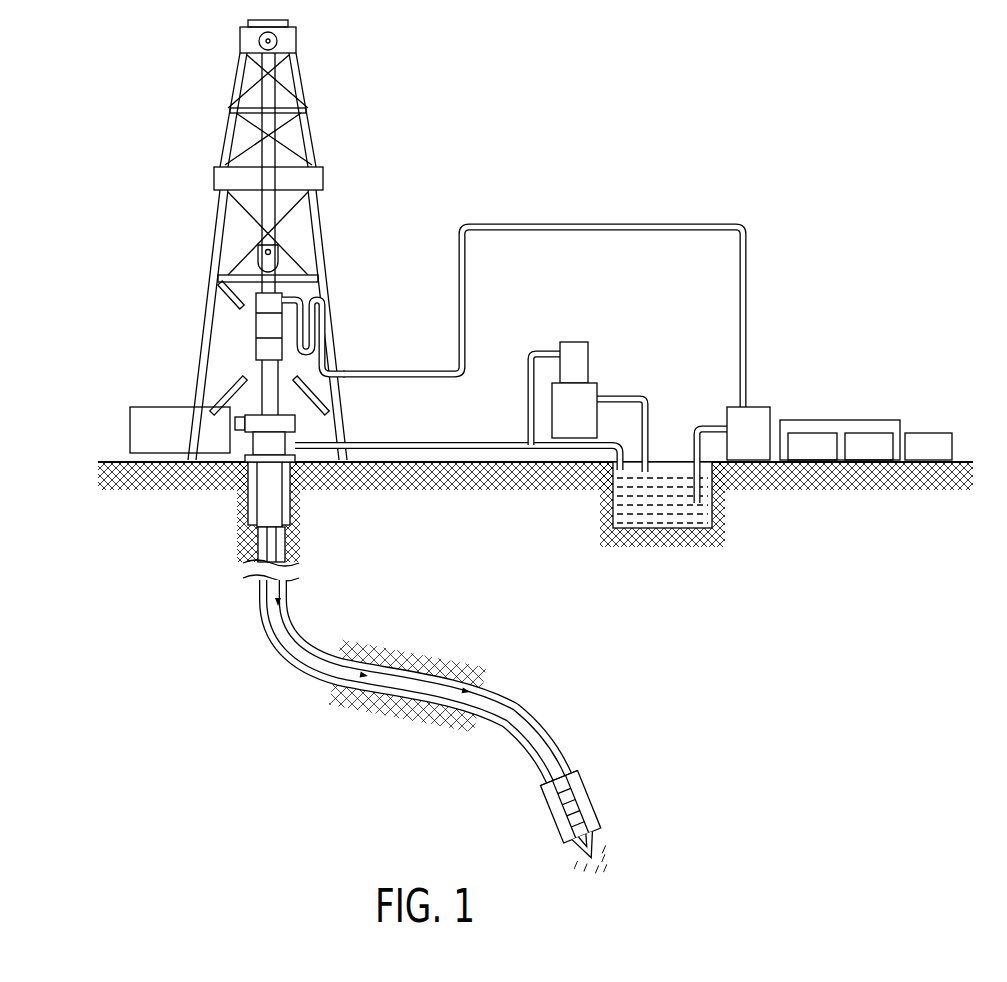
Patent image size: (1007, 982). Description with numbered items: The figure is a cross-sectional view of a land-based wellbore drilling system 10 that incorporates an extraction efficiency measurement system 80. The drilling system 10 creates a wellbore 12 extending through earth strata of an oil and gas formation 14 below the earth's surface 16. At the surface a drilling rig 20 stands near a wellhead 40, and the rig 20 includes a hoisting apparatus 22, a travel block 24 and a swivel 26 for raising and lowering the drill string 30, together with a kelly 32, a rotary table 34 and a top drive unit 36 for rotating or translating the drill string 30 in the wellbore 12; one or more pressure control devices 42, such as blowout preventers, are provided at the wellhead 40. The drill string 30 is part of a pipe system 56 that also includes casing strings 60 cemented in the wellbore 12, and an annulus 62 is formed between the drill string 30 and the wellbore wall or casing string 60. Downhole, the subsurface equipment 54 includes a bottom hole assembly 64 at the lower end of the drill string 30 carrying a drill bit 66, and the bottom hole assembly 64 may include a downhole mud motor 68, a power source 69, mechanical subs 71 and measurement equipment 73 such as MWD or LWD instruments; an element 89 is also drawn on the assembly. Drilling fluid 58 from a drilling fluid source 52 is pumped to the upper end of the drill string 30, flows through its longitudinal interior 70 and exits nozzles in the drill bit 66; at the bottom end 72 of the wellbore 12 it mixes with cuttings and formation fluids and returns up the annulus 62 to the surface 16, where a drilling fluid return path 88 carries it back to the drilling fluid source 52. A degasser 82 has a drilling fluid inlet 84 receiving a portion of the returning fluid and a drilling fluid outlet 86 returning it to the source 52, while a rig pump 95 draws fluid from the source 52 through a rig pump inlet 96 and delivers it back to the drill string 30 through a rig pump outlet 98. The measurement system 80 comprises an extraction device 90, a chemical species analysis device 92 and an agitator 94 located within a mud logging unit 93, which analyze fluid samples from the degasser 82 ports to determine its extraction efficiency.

The wellbore drilling system 10 is at (372, 113).
The wellbore 12 is at (327, 672).
The formation 14 is at (763, 589).
The earth's surface 16 is at (115, 462).
The drilling rig 20 is at (241, 34).
The hoisting apparatus 22 is at (287, 43).
The travel block 24 is at (280, 258).
The swivel 26 is at (285, 300).
The drill string 30 is at (312, 630).
The kelly 32 is at (228, 392).
The rotary table 34 is at (313, 398).
The top drive unit 36 is at (268, 345).
The wellhead 40 is at (298, 430).
The pressure control device 42 is at (252, 448).
The drilling fluid source 52 is at (690, 532).
The subsurface equipment 54 is at (580, 702).
The pipe system 56 is at (276, 650).
The drilling fluid 58 is at (640, 517).
The casing string 60 is at (248, 487).
The annulus 62 is at (313, 655).
The bottom hole assembly 64 is at (553, 813).
The drill bit 66 is at (580, 857).
The downhole mud motor 68 is at (570, 795).
The power source 69 is at (577, 812).
The longitudinal interior 70 is at (535, 738).
The mechanical sub 71 is at (593, 825).
The bottom end 72 is at (598, 868).
The measurement equipment 73 is at (562, 838).
The extraction efficiency measurement system 80 is at (840, 324).
The degasser 82 is at (580, 340).
The drilling fluid inlet 84 is at (534, 350).
The drilling fluid outlet 86 is at (606, 398).
The drilling fluid return path 88 is at (462, 443).
The measurement tool 89 is at (558, 783).
The extraction device 90 is at (797, 433).
The chemical species analysis device 92 is at (857, 433).
The mud logging unit 93 is at (893, 420).
The agitator 94 is at (925, 433).
The rig pump 95 is at (765, 407).
The rig pump inlet 96 is at (698, 428).
The rig pump outlet 98 is at (535, 222).